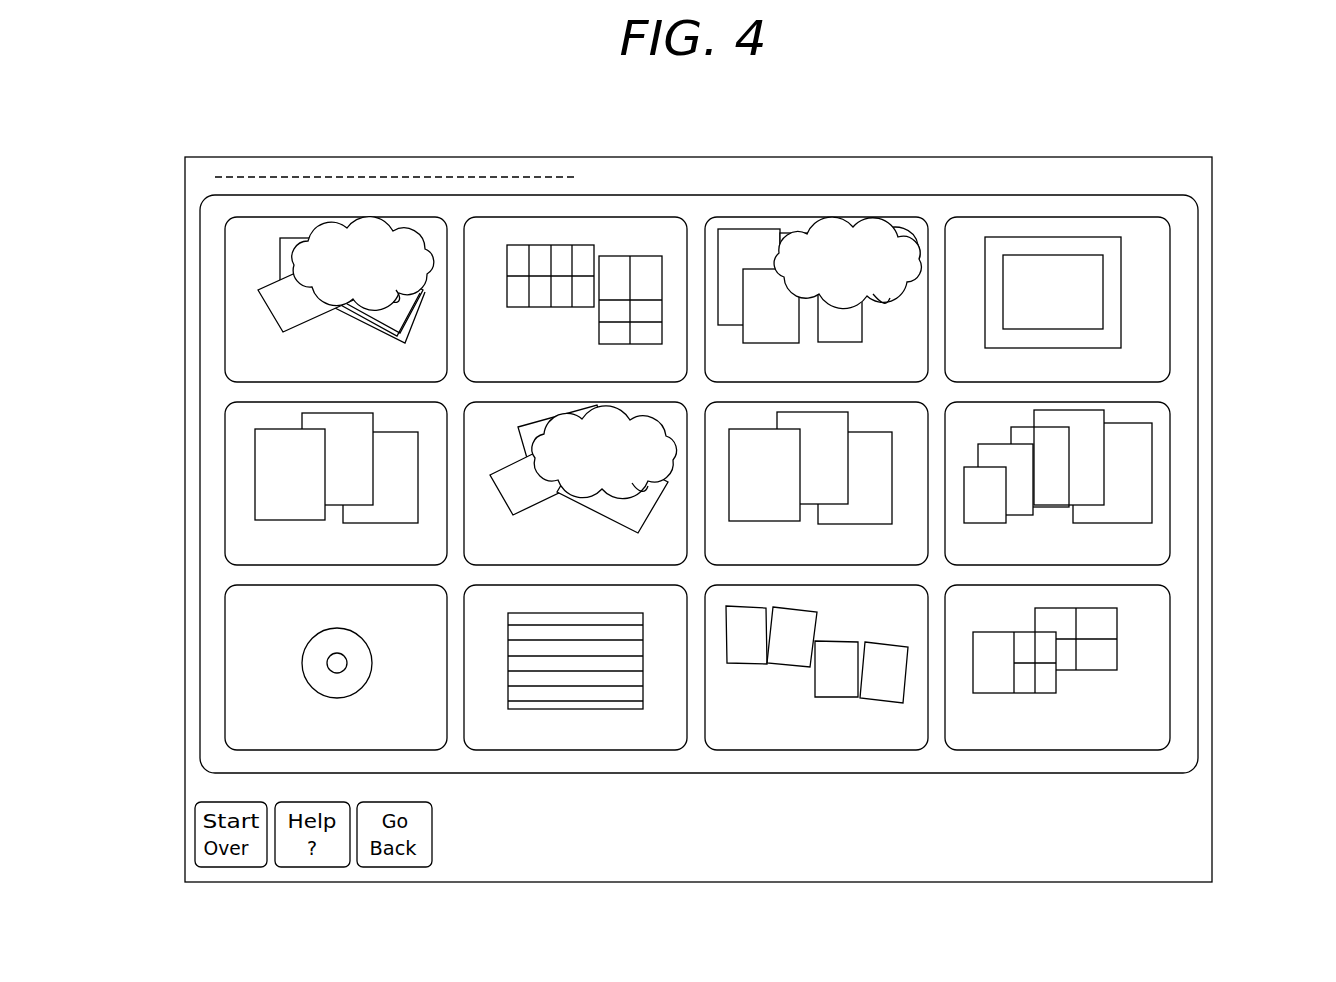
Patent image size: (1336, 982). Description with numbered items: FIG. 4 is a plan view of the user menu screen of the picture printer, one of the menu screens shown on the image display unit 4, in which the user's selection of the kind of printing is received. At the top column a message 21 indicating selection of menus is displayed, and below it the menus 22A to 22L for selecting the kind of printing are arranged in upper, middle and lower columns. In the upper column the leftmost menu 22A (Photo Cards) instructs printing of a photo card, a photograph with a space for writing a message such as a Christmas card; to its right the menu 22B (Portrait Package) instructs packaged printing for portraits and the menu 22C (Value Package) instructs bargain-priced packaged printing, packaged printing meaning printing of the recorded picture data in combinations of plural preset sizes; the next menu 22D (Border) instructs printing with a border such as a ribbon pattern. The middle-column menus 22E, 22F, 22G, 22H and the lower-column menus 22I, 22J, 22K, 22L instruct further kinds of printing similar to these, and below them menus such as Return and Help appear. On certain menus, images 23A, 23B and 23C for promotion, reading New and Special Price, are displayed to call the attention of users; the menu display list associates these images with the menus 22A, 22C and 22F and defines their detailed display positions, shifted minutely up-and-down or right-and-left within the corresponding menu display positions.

The image display unit 4 is at (1133, 157).
The message 21 is at (229, 168).
The menu (4×8 Photo Cards) 22A is at (336, 239).
The menu (Portrait Package) 22B is at (583, 217).
The menu (Value Package) 22C is at (816, 239).
The menu (Border) 22D is at (1053, 217).
The menu for selecting the kind of printing 22E is at (225, 462).
The menu for selecting the kind of printing 22F is at (582, 466).
The menu for selecting the kind of printing 22G is at (880, 568).
The menu for selecting the kind of printing 22H is at (1170, 460).
The menu for selecting the kind of printing 22I is at (225, 655).
The menu for selecting the kind of printing 22J is at (542, 750).
The menu for selecting the kind of printing 22K is at (797, 750).
The menu for selecting the kind of printing 22L is at (1043, 750).
The image for promotion (New) 23A is at (395, 232).
The image for promotion (Special Price) 23B is at (867, 232).
The image for promotion (Special Price) 23C is at (670, 418).